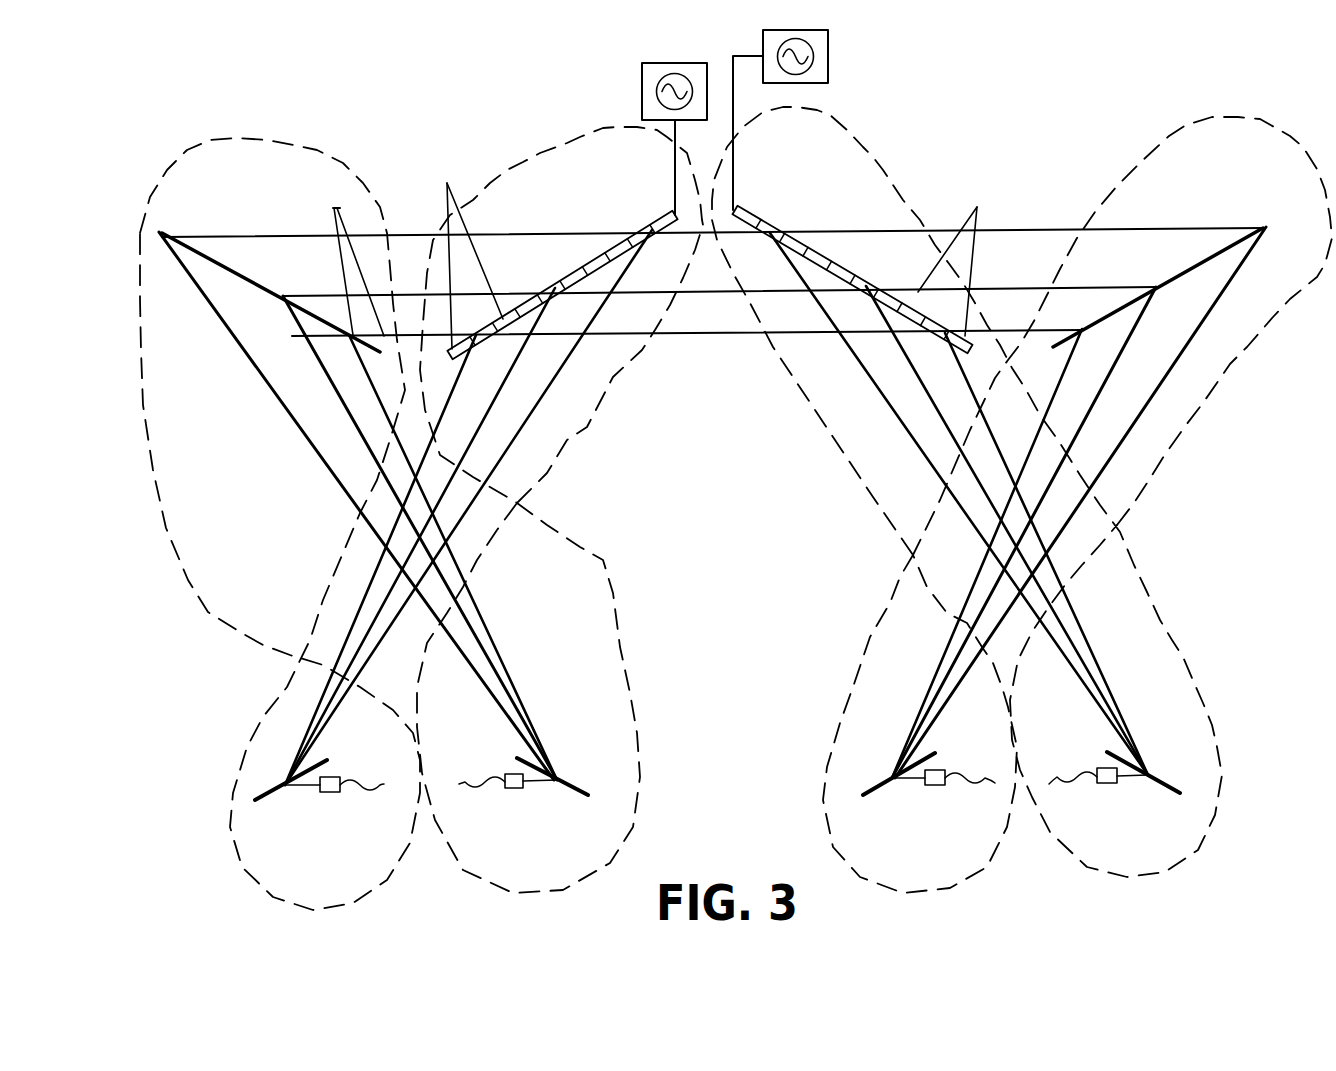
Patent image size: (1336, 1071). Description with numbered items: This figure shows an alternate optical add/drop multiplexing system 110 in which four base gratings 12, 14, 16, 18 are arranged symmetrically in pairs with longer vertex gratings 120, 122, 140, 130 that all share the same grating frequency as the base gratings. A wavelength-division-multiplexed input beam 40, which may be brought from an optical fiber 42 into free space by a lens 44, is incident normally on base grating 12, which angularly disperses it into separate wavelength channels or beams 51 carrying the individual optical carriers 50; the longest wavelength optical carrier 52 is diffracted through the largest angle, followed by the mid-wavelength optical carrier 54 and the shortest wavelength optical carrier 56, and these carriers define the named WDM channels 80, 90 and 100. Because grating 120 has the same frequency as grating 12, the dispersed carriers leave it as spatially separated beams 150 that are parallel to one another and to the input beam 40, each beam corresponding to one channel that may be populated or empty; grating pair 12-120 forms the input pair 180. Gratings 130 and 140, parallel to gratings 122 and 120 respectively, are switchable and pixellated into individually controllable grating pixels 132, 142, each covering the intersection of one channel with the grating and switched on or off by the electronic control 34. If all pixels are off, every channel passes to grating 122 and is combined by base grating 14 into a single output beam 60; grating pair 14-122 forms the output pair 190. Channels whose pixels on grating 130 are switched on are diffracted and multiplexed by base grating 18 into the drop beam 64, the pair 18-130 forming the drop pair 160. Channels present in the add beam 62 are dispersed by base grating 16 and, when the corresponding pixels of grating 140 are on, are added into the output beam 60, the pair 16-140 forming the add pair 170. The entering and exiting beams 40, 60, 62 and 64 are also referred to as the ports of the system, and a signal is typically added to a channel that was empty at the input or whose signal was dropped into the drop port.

The base diffraction grating 12 is at (577, 785).
The base grating 14 is at (875, 792).
The base grating 16 is at (1168, 783).
The base grating 18 is at (270, 797).
The electronic control 34 is at (642, 92).
The input beam 40 is at (537, 783).
The optical fibers 42 is at (373, 787).
The lenses 44 is at (332, 777).
The optical carriers 50 is at (468, 642).
The wavelength channels or beams 51 is at (490, 650).
The longest wavelength optical carrier 52 is at (330, 464).
The mid-wavelength optical carrier 54 is at (350, 417).
The shortest wavelength optical carrier 56 is at (371, 385).
The output beam 60 is at (912, 782).
The add beam 62 is at (1128, 777).
The drop beam 64 is at (305, 787).
The WDM channel 80 is at (356, 506).
The WDM channel 90 is at (620, 538).
The WDM channel 100 is at (378, 557).
The optical add/drop multiplexing system 110 is at (352, 140).
The vertex grating 120 is at (172, 232).
The vertex grating 122 is at (1263, 227).
The switchable pixellated grating 130 is at (673, 213).
The focal point 132 is at (461, 252).
The switchable pixellated grating 140 is at (738, 207).
The focal point 142 is at (959, 258).
The beams 150 is at (349, 258).
The drop pair 160 is at (513, 167).
The add pair 170 is at (870, 153).
The input pair 180 is at (197, 140).
The output pair 190 is at (1186, 121).